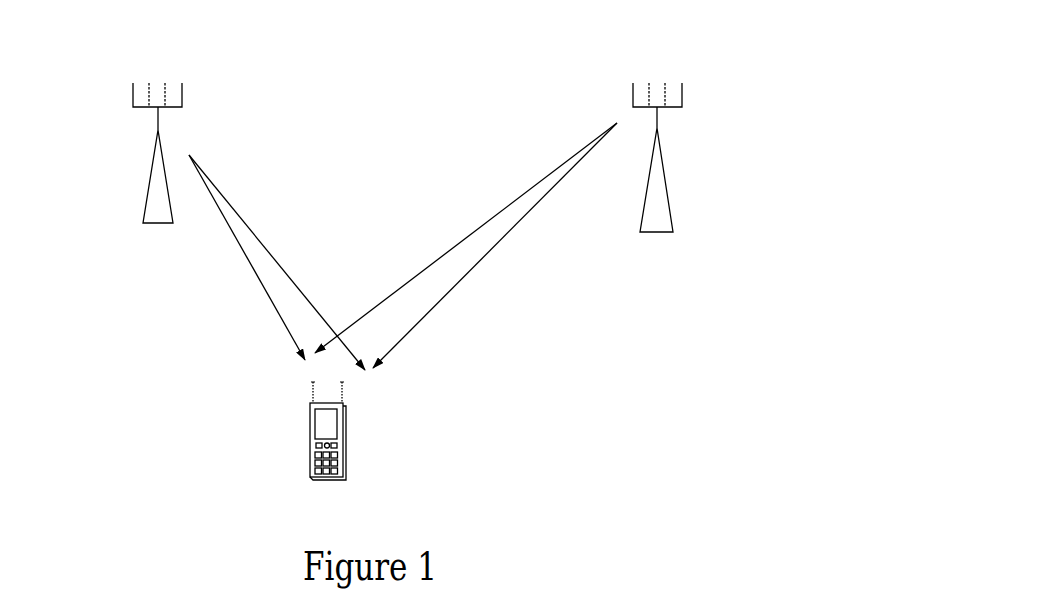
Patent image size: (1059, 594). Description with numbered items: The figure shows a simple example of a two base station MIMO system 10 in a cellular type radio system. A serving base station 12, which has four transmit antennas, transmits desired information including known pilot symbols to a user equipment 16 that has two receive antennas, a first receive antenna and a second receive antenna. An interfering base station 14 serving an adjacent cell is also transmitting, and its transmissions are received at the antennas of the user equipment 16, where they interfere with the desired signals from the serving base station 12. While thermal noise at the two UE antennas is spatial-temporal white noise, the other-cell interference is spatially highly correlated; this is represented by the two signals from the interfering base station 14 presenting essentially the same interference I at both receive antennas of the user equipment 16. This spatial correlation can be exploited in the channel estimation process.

The two base station MIMO system 10 is at (36, 34).
The serving base station 12 is at (150, 173).
The interfering base station 14 is at (660, 175).
The user equipment 16 is at (346, 456).